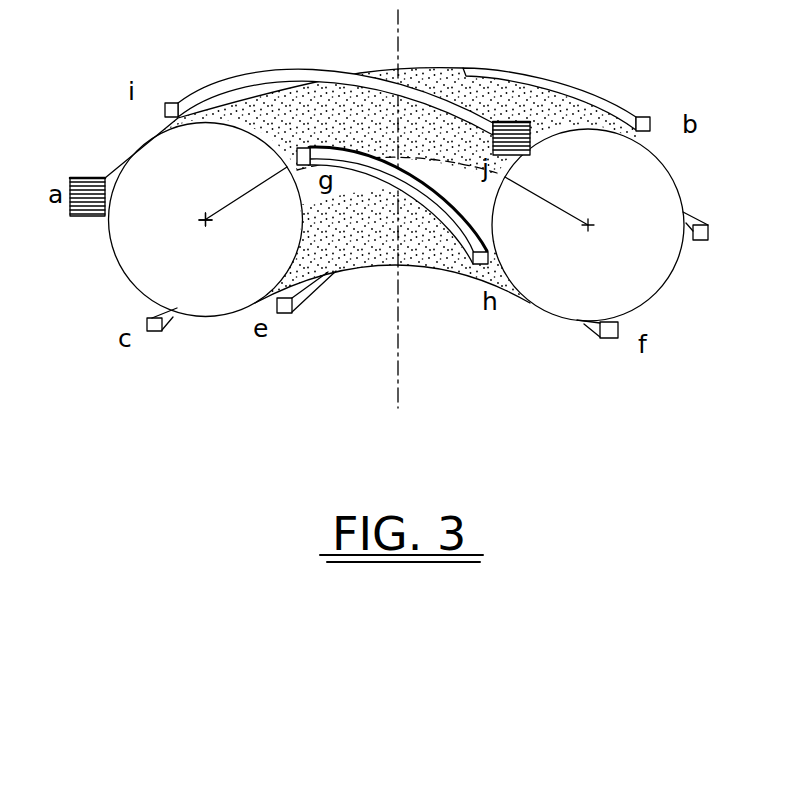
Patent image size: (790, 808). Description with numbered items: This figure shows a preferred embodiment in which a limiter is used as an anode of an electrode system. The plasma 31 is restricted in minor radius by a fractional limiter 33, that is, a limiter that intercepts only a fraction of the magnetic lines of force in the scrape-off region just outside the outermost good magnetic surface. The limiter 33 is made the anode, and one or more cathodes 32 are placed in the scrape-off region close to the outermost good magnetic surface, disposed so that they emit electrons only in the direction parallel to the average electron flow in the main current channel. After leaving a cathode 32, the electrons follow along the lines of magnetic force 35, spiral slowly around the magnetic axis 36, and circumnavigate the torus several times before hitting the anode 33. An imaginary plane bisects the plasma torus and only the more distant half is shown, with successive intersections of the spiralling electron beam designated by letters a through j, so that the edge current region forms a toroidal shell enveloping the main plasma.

The plasma 31 is at (110, 248).
The cathode 32 is at (82, 178).
The fractional limiter 33 is at (500, 122).
The lines of magnetic force 35 is at (257, 70).
The magnetic axis 36 is at (230, 196).